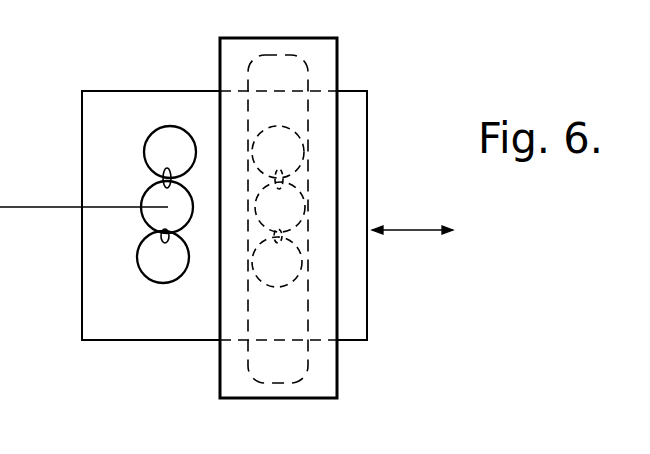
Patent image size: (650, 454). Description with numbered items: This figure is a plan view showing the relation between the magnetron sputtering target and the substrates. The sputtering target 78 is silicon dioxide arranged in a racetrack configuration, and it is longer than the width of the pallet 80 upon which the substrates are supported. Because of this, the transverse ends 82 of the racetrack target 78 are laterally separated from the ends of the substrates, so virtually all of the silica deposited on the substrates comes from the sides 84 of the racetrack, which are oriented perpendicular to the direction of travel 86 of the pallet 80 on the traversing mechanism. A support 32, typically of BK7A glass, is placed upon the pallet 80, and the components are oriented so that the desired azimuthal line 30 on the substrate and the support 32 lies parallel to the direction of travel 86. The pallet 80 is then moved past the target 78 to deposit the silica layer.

The azimuthal line 30 is at (27, 208).
The support 32 is at (153, 284).
The sputtering target 78 is at (220, 62).
The pallet 80 is at (82, 132).
The transverse ends 82 is at (242, 44).
The sides 84 is at (235, 126).
The direction of travel 86 is at (407, 232).